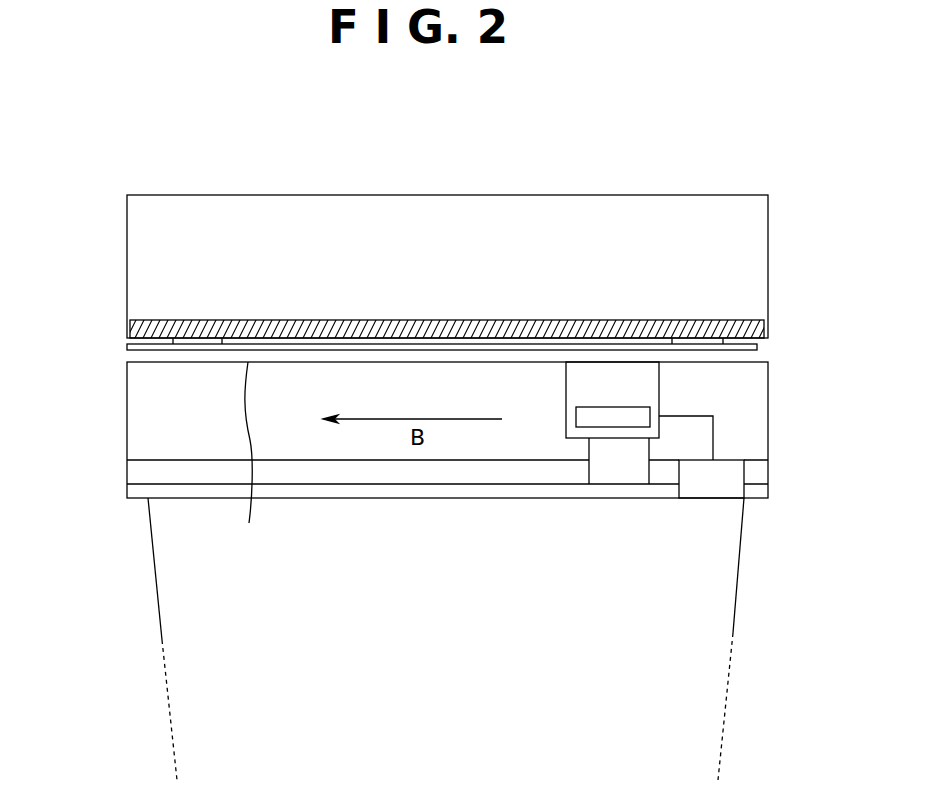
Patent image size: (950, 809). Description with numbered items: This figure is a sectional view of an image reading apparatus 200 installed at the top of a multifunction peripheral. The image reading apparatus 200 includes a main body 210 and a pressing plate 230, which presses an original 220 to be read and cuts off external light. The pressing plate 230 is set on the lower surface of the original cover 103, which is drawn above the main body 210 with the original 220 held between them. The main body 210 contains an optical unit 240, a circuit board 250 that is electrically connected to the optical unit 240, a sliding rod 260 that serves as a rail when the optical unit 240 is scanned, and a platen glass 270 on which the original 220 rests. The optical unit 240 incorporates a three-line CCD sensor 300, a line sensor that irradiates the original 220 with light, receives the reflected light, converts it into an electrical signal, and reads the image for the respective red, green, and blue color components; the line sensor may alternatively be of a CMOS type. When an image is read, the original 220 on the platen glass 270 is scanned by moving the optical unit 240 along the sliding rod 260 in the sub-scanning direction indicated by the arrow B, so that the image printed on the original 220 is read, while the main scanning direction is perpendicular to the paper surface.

The image reading apparatus 200 is at (470, 157).
The original cover 103 is at (127, 237).
The pressing plate 230 is at (766, 329).
The original 220 is at (127, 347).
The main body 210 is at (127, 412).
The optical unit 240 is at (606, 372).
The circuit board 250 is at (710, 483).
The sliding rod 260 is at (430, 473).
The platen glass 270 is at (248, 459).
The 3-line CCD sensor 300 is at (614, 419).